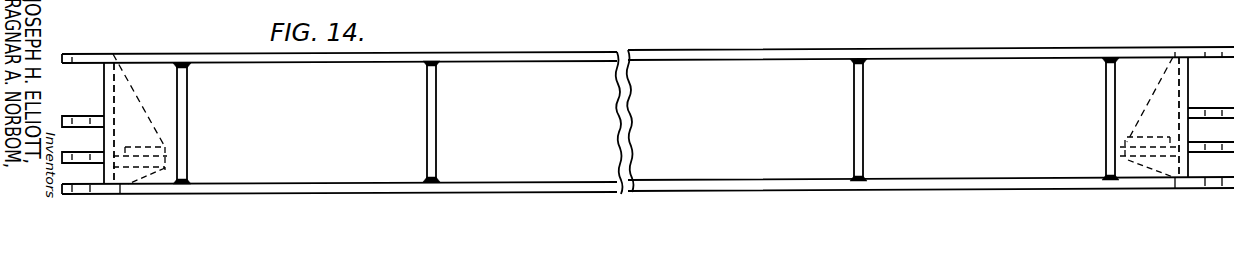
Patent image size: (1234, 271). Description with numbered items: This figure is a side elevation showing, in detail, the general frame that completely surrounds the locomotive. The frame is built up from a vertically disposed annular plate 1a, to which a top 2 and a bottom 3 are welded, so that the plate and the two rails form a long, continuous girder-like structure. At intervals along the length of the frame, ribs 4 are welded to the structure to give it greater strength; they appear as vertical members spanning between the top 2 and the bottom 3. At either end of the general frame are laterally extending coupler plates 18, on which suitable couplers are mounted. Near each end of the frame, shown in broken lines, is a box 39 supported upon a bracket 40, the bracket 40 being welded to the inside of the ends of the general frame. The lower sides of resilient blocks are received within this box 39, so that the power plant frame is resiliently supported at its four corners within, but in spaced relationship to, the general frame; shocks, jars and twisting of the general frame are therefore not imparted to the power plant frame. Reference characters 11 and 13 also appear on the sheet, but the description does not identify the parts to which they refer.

The vertically disposed annular plate 1a is at (1205, 35).
The top 2 is at (205, 52).
The bottom 3 is at (257, 185).
The ribs 4 is at (188, 116).
The side sill 11 is at (586, 0).
The roof 13 is at (690, 0).
The coupler plates 18 is at (96, 116).
The box 39 is at (186, 138).
The bracket 40 is at (187, 160).